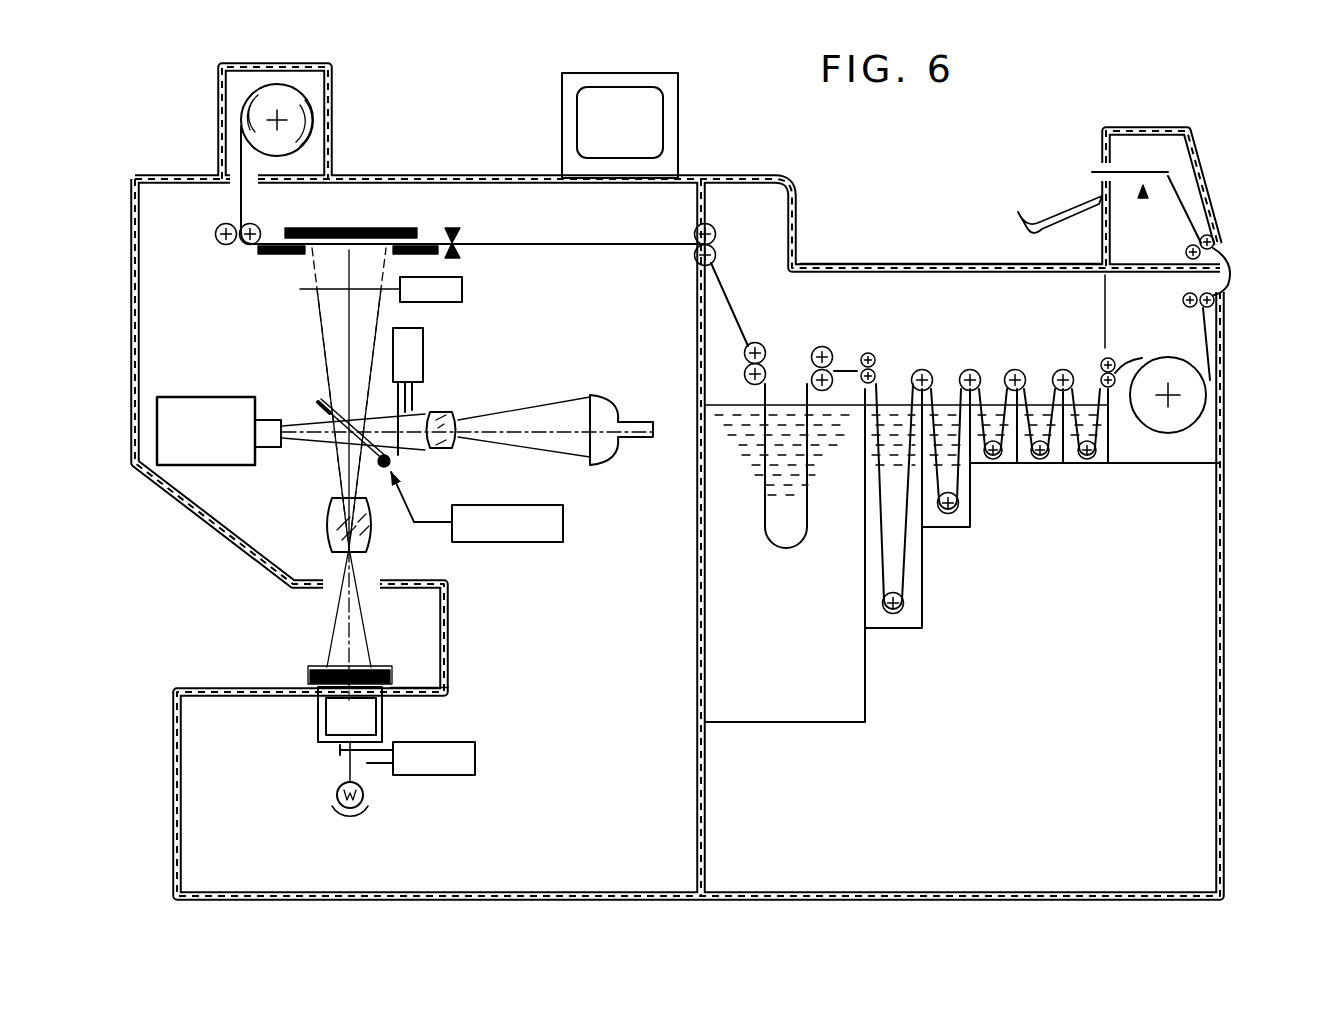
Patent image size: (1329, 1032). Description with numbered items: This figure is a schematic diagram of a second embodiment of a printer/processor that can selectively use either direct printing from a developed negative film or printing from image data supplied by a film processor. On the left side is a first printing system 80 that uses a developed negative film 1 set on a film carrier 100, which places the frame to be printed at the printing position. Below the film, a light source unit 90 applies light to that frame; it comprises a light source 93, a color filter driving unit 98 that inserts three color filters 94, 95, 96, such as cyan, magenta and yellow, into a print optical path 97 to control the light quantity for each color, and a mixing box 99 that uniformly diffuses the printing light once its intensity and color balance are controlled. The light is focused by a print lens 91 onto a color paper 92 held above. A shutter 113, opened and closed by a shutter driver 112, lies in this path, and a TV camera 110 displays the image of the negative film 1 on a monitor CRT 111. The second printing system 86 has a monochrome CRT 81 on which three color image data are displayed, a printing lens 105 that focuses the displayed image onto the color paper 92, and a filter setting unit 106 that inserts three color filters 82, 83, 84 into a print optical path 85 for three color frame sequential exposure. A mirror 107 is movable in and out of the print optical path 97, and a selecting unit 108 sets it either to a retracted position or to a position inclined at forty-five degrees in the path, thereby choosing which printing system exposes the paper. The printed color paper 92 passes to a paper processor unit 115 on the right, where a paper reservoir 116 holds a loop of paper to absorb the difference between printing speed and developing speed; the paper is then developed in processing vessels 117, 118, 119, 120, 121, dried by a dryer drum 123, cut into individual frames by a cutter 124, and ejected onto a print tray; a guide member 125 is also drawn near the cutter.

The negative film 1 is at (307, 676).
The first printing system 80 is at (410, 545).
The monochrome CRT 81 is at (617, 417).
The color filter 82 is at (402, 445).
The color filter 83 is at (417, 402).
The color filter 84 is at (415, 390).
The print optical path 85 is at (545, 425).
The second printing system 86 is at (530, 350).
The light source unit 90 is at (312, 766).
The print lens 91 is at (325, 522).
The color paper 92 is at (302, 118).
The light source 93 is at (330, 798).
The color filter 94 is at (383, 745).
The color filter 95 is at (376, 788).
The color filter 96 is at (368, 766).
The print optical path 97 is at (343, 638).
The color filter driving unit 98 is at (475, 760).
The mixing box 99 is at (317, 720).
The film carrier 100 is at (395, 683).
The printing lens 105 is at (457, 443).
The filter setting unit 106 is at (423, 347).
The mirror 107 is at (317, 405).
The selecting unit 108 is at (563, 522).
The TV camera 110 is at (157, 432).
The monitor CRT 111 is at (650, 118).
The shutter driver 112 is at (462, 288).
The shutter 113 is at (307, 297).
The paper processor unit 115 is at (870, 297).
The paper reservoir 116 is at (797, 710).
The processing vessel 117 is at (900, 628).
The processing vessel 118 is at (953, 527).
The processing vessel 119 is at (1003, 463).
The processing vessel 120 is at (1055, 463).
The processing vessel 121 is at (1100, 463).
The dryer drum 123 is at (1197, 400).
The cutter 124 is at (1146, 152).
The guide member 125 is at (1027, 218).